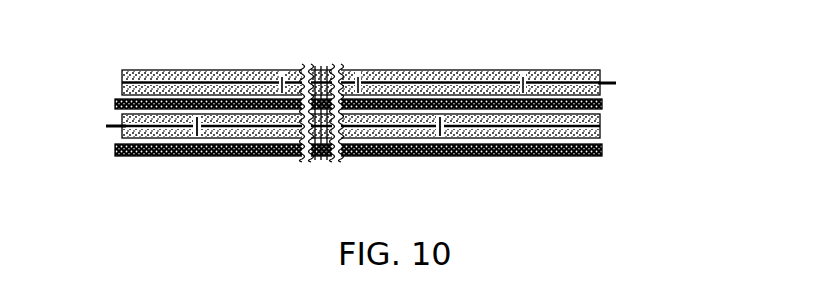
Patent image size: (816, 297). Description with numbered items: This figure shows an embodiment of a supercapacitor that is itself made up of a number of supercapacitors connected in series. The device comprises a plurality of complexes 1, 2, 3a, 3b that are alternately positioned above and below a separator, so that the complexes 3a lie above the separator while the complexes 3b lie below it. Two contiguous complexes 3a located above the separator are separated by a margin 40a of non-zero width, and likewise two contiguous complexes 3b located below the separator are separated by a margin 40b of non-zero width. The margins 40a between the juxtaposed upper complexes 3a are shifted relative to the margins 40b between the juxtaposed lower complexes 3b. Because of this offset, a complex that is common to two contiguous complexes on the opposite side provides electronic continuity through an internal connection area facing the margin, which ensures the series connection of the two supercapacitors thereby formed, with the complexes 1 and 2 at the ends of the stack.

The complex 1 is at (110, 127).
The complex 2 is at (610, 83).
The complex located above the separator 3a is at (121, 82).
The complex located below the separator 3b is at (280, 141).
The margin between juxtaposed complexes above the separator 40a is at (282, 88).
The margin between juxtaposed complexes below the separator 40b is at (197, 140).